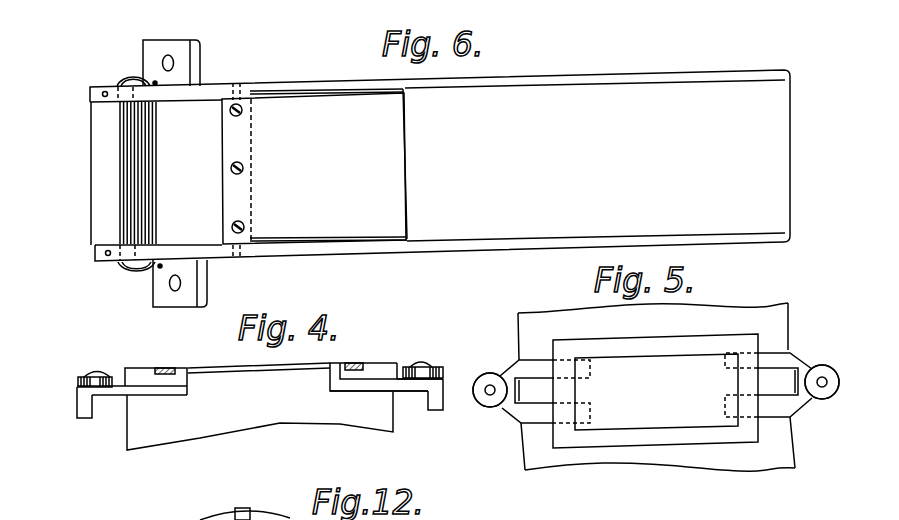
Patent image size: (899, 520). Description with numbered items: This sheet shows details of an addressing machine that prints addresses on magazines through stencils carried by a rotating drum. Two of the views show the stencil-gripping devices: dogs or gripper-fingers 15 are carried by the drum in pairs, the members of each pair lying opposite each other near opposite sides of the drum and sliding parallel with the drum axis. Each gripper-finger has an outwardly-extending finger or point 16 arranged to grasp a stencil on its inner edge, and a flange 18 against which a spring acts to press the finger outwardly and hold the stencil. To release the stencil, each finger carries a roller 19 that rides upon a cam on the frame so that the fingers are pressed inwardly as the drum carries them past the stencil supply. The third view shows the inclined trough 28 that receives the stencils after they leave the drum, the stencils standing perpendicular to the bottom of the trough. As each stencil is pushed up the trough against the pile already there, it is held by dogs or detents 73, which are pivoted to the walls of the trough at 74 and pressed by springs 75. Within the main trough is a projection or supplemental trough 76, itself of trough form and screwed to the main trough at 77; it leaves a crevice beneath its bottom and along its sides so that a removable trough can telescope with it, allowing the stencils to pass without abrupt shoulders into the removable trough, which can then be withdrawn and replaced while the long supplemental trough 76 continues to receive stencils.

In FIG. 4, the gripper-fingers 15 is at (408, 387).
In FIG. 5, the gripper-fingers 15 is at (537, 357).
In FIG. 4, the outwardly-extending fingers or points 16 is at (186, 381).
In FIG. 5, the outwardly-extending fingers or points 16 is at (585, 418).
In FIG. 4, the flanges 18 is at (87, 420).
In FIG. 4, the rollers 19 is at (95, 381).
In FIG. 5, the rollers 19 is at (492, 402).
In FIG. 6, the trough 28 is at (303, 245).
In FIG. 6, the dogs or detents 73 is at (118, 105).
In FIG. 6, the pivot 74 is at (92, 93).
In FIG. 6, the springs 75 is at (132, 79).
In FIG. 6, the projection or supplemental trough 76 is at (403, 97).
In FIG. 6, the screws 77 is at (245, 168).